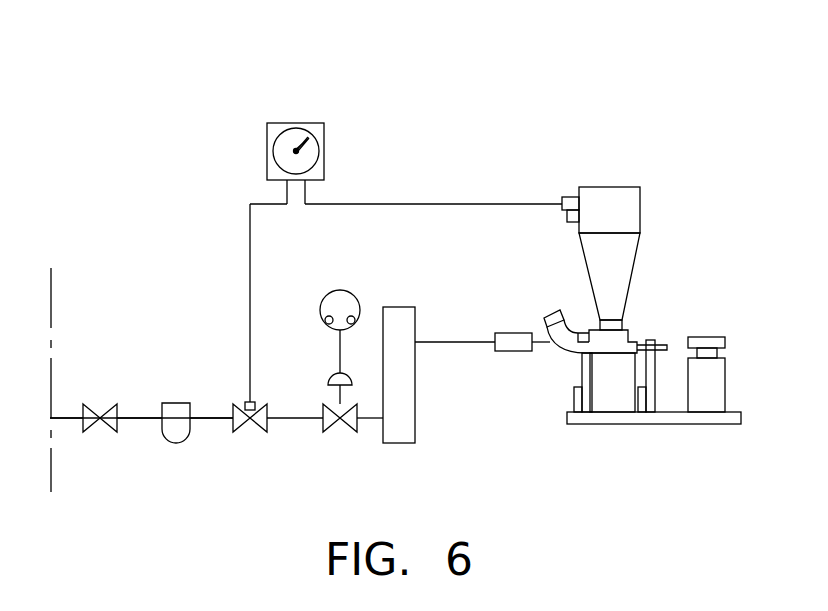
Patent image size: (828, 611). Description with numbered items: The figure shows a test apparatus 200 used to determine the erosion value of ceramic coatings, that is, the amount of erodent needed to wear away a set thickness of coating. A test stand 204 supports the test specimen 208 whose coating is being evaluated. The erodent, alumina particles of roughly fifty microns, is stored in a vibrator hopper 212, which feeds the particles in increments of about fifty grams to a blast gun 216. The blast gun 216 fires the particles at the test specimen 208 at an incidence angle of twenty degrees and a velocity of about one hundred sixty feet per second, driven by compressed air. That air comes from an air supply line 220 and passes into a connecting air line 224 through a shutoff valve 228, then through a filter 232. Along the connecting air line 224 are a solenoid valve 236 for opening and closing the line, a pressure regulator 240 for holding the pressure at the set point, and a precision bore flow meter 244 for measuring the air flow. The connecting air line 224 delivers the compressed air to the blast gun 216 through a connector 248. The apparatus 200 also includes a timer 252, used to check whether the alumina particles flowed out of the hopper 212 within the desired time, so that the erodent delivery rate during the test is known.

The test apparatus 200 is at (180, 58).
The test stand 204 is at (727, 378).
The test specimen 208 is at (707, 337).
The vibrator hopper 212 is at (613, 187).
The blast gun 216 is at (554, 313).
The air supply line 220 is at (44, 482).
The connecting air line 224 is at (148, 465).
The shutoff valve 228 is at (103, 410).
The filter 232 is at (175, 403).
The solenoid valve 236 is at (253, 432).
The pressure regulator 240 is at (344, 432).
The precision bore flow meter 244 is at (415, 404).
The connector 248 is at (504, 351).
The timer 252 is at (313, 123).